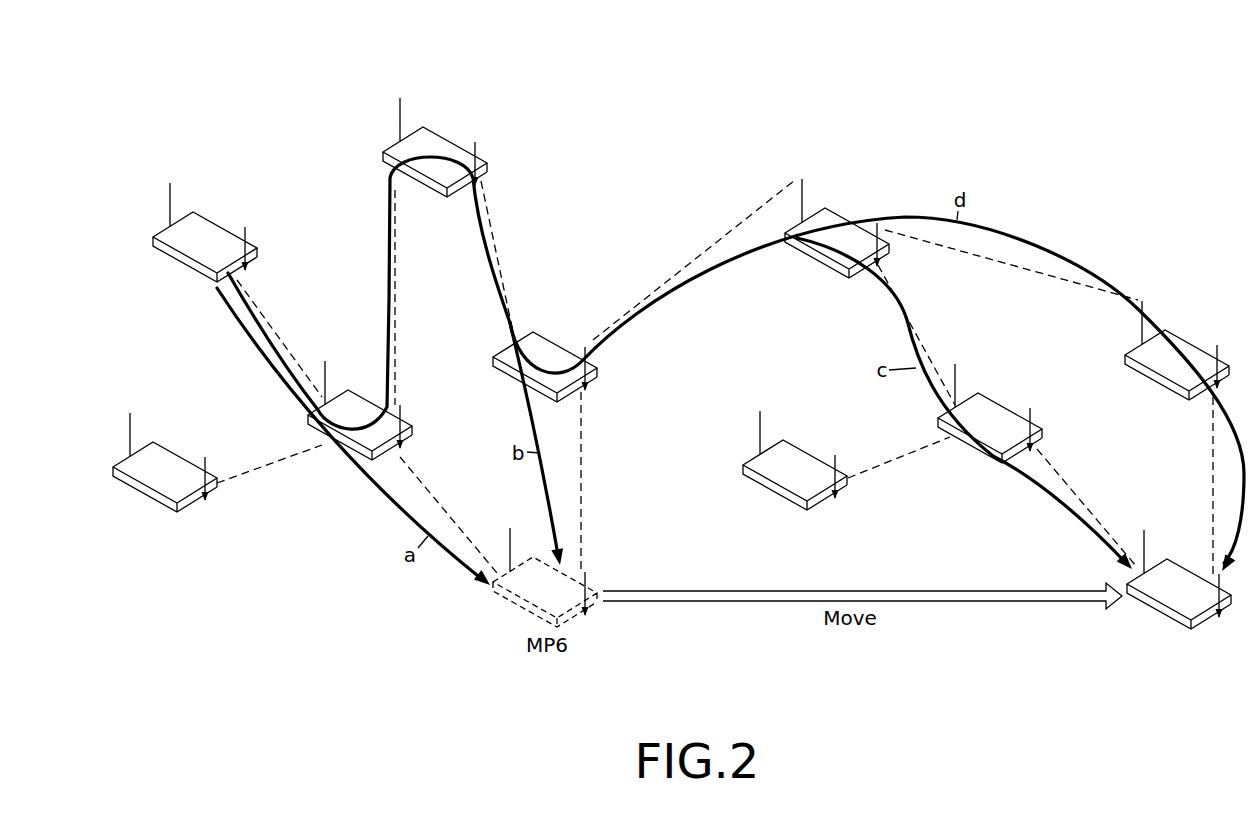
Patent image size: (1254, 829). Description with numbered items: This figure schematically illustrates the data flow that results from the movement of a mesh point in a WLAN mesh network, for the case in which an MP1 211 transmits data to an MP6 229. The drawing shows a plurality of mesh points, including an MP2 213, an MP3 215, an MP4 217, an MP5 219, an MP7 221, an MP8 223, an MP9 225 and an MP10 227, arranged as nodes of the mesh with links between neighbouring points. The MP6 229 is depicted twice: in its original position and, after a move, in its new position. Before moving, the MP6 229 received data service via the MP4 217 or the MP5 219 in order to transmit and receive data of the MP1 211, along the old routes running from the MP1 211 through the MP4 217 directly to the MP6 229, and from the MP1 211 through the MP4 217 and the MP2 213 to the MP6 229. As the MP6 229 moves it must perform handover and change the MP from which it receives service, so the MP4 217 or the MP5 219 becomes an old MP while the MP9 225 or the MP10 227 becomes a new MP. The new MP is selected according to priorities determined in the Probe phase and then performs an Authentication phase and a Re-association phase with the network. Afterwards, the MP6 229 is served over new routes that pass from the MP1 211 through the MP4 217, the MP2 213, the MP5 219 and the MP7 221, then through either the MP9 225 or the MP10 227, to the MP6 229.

The MP1 211 is at (222, 222).
The MP2 213 is at (452, 137).
The MP3 215 is at (181, 452).
The MP4 217 is at (361, 393).
The MP5 219 is at (560, 342).
The MP7 221 is at (853, 220).
The MP8 223 is at (815, 450).
The MP9 225 is at (992, 391).
The MP10 227 is at (1203, 346).
The MP6 229 is at (1172, 556).